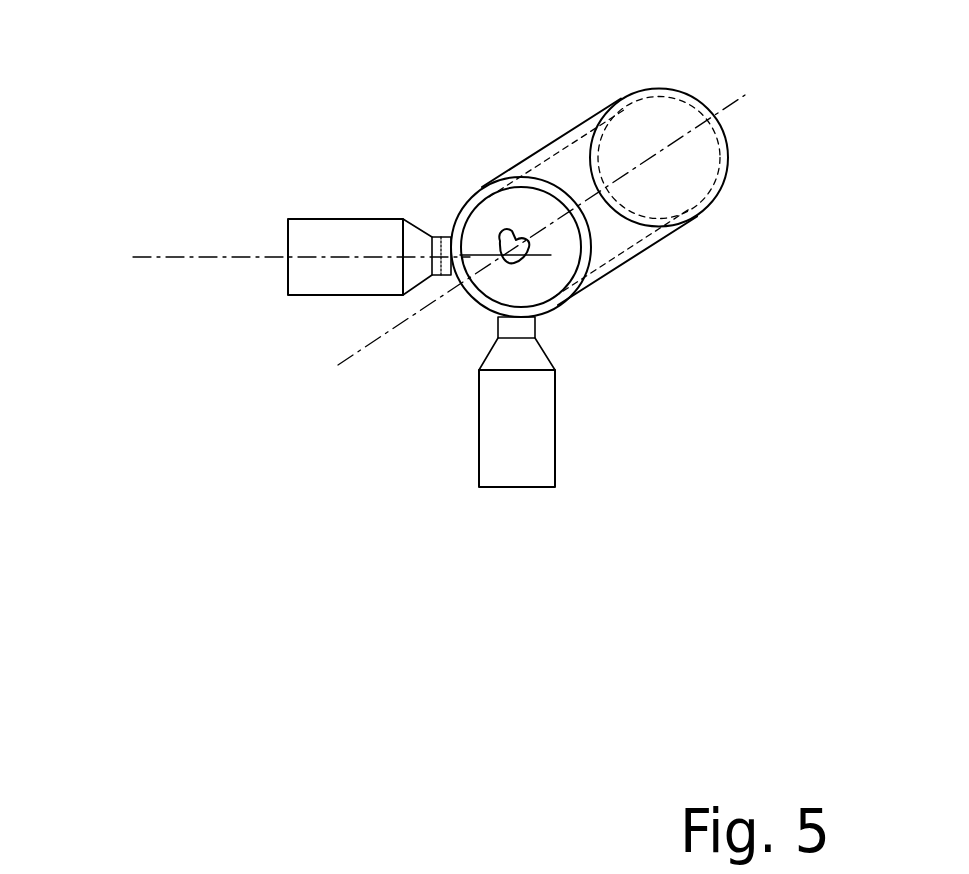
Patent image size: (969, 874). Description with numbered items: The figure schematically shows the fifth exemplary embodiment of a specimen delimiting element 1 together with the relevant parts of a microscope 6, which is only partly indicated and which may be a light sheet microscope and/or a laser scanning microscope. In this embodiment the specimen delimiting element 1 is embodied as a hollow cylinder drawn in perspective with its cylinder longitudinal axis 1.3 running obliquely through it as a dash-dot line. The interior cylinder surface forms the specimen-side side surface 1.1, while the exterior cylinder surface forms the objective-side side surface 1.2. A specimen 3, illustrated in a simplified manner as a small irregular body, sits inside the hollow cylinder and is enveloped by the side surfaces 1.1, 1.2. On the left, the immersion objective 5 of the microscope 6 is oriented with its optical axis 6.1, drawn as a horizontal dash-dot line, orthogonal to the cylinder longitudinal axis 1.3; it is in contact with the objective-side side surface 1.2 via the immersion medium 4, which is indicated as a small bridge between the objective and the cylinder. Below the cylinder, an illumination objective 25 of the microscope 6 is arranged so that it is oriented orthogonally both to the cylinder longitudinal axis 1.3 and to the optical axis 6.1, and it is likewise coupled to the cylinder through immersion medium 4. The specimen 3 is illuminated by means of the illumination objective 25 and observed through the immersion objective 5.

The specimen delimiting element 1 is at (647, 86).
The specimen-side side surface 1.1 is at (501, 318).
The objective-side side surface 1.2 is at (574, 128).
The cylinder longitudinal axis 1.3 is at (373, 346).
The specimen 3 is at (524, 327).
The immersion medium 4 is at (440, 236).
The immersion objective 5 is at (309, 228).
The microscope 6 is at (287, 101).
The optical axis 6.1 is at (183, 255).
The illumination objective 25 is at (487, 438).